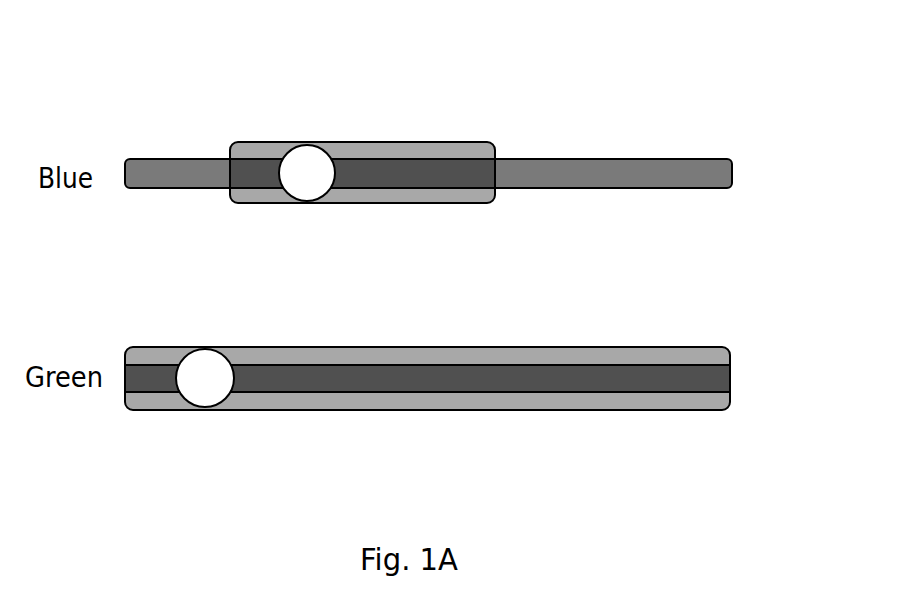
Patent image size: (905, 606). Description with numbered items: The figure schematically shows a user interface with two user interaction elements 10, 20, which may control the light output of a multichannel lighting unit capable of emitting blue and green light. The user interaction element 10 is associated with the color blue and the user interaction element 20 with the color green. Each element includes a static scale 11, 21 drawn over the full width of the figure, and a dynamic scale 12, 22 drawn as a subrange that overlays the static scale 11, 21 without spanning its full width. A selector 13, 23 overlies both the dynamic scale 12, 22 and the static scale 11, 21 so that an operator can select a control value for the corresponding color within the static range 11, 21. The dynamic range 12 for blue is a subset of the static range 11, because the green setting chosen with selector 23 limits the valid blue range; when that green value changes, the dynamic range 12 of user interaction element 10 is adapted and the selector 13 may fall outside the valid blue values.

The user interaction element 10 is at (469, 104).
The static scale 11 is at (595, 159).
The dynamic scale 12 is at (460, 142).
The selector 13 is at (307, 163).
The user interaction element 20 is at (471, 302).
The static scale 21 is at (595, 365).
The dynamic scale 22 is at (315, 347).
The selector 23 is at (205, 373).